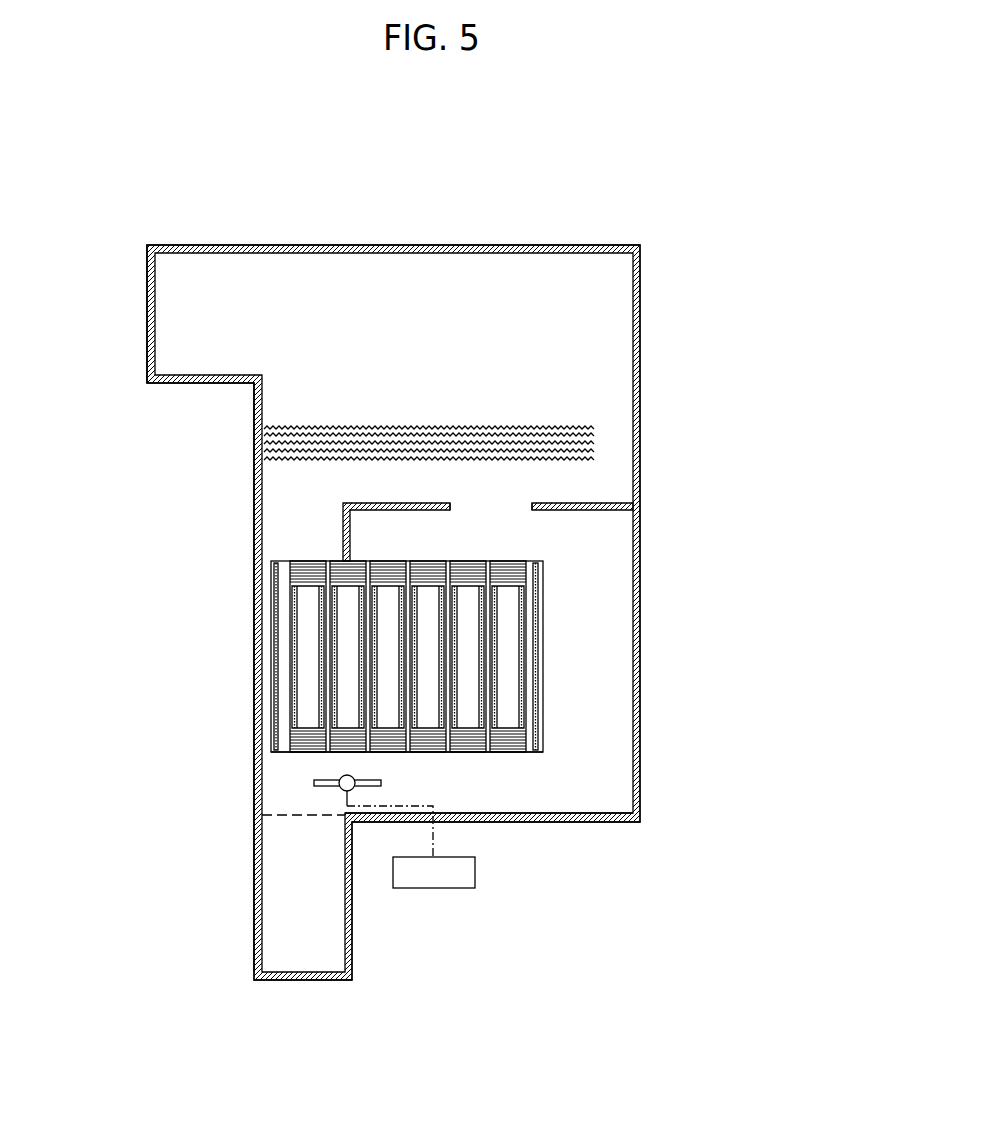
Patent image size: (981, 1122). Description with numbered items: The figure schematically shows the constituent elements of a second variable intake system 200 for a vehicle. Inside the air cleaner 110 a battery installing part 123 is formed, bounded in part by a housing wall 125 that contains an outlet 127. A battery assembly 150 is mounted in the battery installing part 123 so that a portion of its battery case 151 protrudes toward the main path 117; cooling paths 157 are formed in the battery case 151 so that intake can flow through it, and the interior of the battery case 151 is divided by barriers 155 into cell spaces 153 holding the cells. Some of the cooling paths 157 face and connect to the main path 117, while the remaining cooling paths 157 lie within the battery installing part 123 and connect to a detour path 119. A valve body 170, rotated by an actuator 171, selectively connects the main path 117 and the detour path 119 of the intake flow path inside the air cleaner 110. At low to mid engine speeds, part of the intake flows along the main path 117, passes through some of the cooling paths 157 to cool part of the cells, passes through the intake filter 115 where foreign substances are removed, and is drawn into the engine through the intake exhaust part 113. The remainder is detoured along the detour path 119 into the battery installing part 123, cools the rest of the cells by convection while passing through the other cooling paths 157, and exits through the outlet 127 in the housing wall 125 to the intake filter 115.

The second variable intake system 200 is at (412, 170).
The air cleaner 110 is at (655, 342).
The intake exhaust part 113 is at (147, 312).
The intake filter 115 is at (293, 427).
The main path 117 is at (258, 640).
The detour path 119 is at (490, 798).
The battery installing part 123 is at (328, 527).
The housing wall 125 is at (582, 503).
The outlet 127 is at (507, 503).
The battery assembly 150 is at (447, 722).
The battery case 151 is at (505, 753).
The cell spaces 153 is at (460, 600).
The barriers 155 is at (455, 656).
The cooling paths 157 is at (455, 625).
The valve body 170 is at (370, 787).
The actuator 171 is at (433, 890).